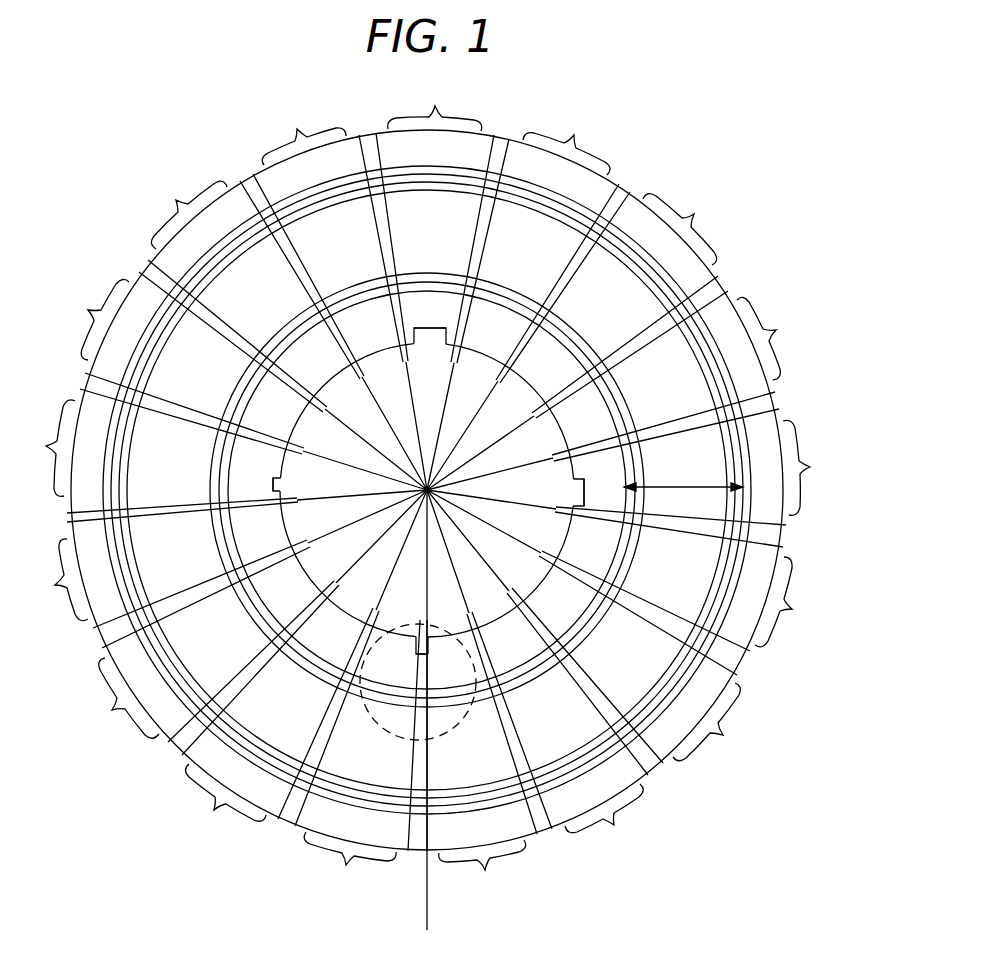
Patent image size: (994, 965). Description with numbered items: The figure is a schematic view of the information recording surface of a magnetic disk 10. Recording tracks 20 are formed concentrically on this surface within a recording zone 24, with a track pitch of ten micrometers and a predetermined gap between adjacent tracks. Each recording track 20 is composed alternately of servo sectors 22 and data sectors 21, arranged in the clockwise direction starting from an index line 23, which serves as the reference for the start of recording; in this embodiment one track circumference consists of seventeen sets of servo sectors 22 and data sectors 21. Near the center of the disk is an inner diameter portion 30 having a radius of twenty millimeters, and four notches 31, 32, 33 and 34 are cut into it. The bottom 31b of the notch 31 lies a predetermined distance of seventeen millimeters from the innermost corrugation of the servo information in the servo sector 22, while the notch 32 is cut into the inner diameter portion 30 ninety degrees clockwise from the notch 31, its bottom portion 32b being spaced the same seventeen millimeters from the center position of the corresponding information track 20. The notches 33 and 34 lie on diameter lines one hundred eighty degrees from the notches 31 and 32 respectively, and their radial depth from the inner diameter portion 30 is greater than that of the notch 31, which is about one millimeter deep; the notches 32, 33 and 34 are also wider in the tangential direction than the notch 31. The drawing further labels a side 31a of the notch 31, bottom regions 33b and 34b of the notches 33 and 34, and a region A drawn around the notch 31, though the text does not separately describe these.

The magnetic disk 10 is at (694, 246).
The recording tracks 20 is at (632, 570).
The data sectors 21 is at (428, 488).
The servo sectors 22 is at (388, 129).
The index line 23 is at (459, 710).
The recording zone 24 is at (683, 474).
The inner diameter portion 30 is at (531, 389).
The notch 31 is at (418, 640).
The notch side 31a is at (467, 620).
The bottom of the notch 31b is at (412, 657).
The notch 32 is at (286, 483).
The bottom portion of notch 32b is at (271, 479).
The notch 33 is at (433, 343).
The notch bottom 33b is at (430, 328).
The notch 34 is at (570, 486).
The notch bottom 34b is at (586, 478).
The enlarged detail region A is at (386, 737).